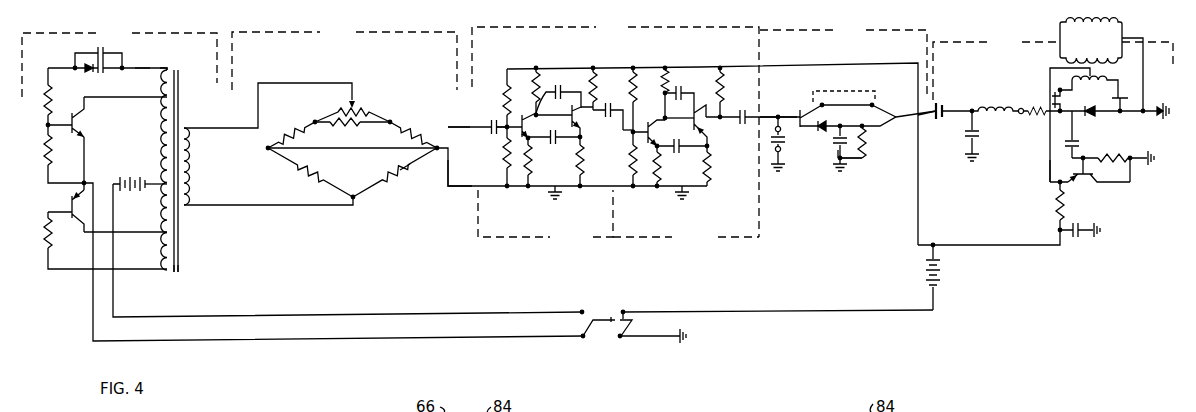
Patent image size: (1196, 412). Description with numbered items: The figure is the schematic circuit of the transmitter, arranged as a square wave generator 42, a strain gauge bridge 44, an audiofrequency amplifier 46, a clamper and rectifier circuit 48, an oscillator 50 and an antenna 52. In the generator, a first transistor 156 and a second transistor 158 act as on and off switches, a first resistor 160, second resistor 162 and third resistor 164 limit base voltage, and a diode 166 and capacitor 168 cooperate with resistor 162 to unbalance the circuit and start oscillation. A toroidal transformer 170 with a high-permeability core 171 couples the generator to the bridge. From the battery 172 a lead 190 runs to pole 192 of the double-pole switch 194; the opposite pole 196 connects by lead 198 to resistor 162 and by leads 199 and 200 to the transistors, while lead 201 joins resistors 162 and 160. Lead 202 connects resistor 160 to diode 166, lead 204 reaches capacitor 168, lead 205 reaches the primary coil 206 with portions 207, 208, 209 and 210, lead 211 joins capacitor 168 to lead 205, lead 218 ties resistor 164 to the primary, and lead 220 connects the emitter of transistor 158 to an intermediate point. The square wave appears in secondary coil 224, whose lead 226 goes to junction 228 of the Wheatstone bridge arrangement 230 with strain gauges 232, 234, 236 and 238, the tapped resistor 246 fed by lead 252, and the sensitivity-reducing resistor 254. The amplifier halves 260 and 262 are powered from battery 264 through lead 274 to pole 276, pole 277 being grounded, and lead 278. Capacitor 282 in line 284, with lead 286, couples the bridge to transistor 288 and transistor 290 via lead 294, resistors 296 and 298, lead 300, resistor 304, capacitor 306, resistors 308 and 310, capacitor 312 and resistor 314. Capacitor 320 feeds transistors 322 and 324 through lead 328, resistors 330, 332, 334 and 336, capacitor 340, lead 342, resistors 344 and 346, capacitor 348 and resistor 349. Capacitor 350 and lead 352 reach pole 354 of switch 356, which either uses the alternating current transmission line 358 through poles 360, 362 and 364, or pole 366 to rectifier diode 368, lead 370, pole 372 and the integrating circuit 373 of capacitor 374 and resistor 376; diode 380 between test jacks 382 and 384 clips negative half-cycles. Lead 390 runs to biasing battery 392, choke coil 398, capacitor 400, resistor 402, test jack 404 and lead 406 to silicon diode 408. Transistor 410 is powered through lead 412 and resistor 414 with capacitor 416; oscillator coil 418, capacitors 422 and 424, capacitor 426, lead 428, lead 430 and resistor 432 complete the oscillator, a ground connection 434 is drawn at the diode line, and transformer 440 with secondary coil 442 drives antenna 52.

The square wave generator 42 is at (119, 63).
The strain gauge bridge 44 is at (344, 56).
The audiofrequency amplifier 46 is at (615, 129).
The clamper and rectifier circuit 48 is at (843, 60).
The oscillator 50 is at (1053, 67).
The antenna 52 is at (1118, 28).
The first transistor 156 is at (80, 129).
The second transistor 158 is at (68, 205).
The first resistor 160 is at (45, 98).
The second resistor 162 is at (45, 150).
The third resistor 164 is at (44, 237).
The diode 166 is at (90, 74).
The capacitor 168 is at (108, 50).
The toroidal transformer 170 is at (182, 241).
The core 171 is at (176, 273).
The battery 172 is at (120, 178).
The lead 190 is at (263, 316).
The pole 192 is at (581, 310).
The double-pole switch 194 is at (604, 342).
The pole 196 is at (579, 339).
The lead 198 is at (90, 183).
The lead 199 is at (85, 165).
The lead 200 is at (80, 190).
The lead 201 is at (45, 127).
The lead 202 is at (52, 67).
The lead 204 is at (80, 56).
The lead 205 is at (140, 72).
The primary coil 206 is at (162, 67).
The primary coil portion 207 is at (165, 78).
The primary coil portion 208 is at (164, 100).
The primary coil portion 209 is at (163, 195).
The primary coil portion 210 is at (162, 258).
The lead 211 is at (125, 66).
The lead 218 is at (79, 271).
The lead 220 is at (162, 232).
The secondary coil 224 is at (193, 173).
The lead 226 is at (262, 207).
The junction 228 is at (358, 198).
The Wheatstone bridge arrangement 230 is at (410, 176).
The strain gauge 232 is at (299, 165).
The strain gauge 234 is at (397, 170).
The strain gauge 236 is at (278, 141).
The strain gauge 238 is at (405, 128).
The tapped resistor 246 is at (363, 106).
The lead 252 is at (320, 82).
The resistor 254 is at (337, 126).
The first amplifier half 260 is at (545, 218).
The second amplifier half 262 is at (686, 238).
The battery 264 is at (941, 275).
The lead 274 is at (785, 313).
The pole 276 is at (625, 310).
The pole 277 is at (620, 339).
The lead 278 is at (614, 66).
The capacitor 282 is at (494, 118).
The line 284 is at (481, 126).
The lead 286 is at (470, 189).
The first transistor 288 is at (537, 110).
The second transistor 290 is at (576, 114).
The lead 294 is at (496, 135).
The resistor 296 is at (505, 92).
The resistor 298 is at (505, 160).
The lead 300 is at (540, 115).
The resistor 304 is at (532, 160).
The capacitor 306 is at (553, 142).
The resistor 308 is at (540, 78).
The resistor 310 is at (536, 66).
The capacitor 312 is at (560, 90).
The resistor 314 is at (594, 68).
The capacitor 320 is at (615, 97).
The transistor 322 is at (647, 119).
The transistor 324 is at (703, 124).
The lead 328 is at (630, 132).
The resistor 330 is at (636, 98).
The resistor 332 is at (632, 170).
The resistor 334 is at (658, 158).
The resistor 336 is at (711, 168).
The capacitor 340 is at (690, 142).
The lead 342 is at (683, 113).
The resistor 344 is at (670, 86).
The resistor 346 is at (666, 67).
The capacitor 348 is at (686, 92).
The resistor 349 is at (722, 88).
The capacitor 350 is at (726, 110).
The lead 352 is at (749, 106).
The pole 354 is at (798, 124).
The switch 356 is at (821, 166).
The alternating current transmission line 358 is at (849, 104).
The pole 360 is at (821, 100).
The pole 362 is at (874, 100).
The pole 364 is at (880, 120).
The pole 366 is at (817, 130).
The rectifier diode 368 is at (840, 125).
The lead 370 is at (850, 162).
The pole 372 is at (865, 134).
The filter or integrating circuit 373 is at (854, 176).
The capacitor 374 is at (834, 140).
The resistor 376 is at (870, 150).
The diode 380 is at (772, 140).
The test jack 382 is at (766, 137).
The test jack 384 is at (776, 160).
The lead 390 is at (921, 120).
The biasing battery 392 is at (940, 104).
The choke coil 398 is at (992, 107).
The capacitor 400 is at (980, 140).
The resistor 402 is at (1041, 121).
The test jack 404 is at (1046, 108).
The lead 406 is at (1064, 116).
The silicon diode 408 is at (1096, 114).
The transistor 410 is at (1086, 188).
The lead 412 is at (1005, 246).
The resistor 414 is at (1055, 208).
The capacitor 416 is at (1076, 238).
The oscillator coil 418 is at (1089, 89).
The capacitor 422 is at (1123, 90).
The capacitor 424 is at (1050, 82).
The capacitor 426 is at (1080, 144).
The lead 428 is at (1050, 166).
The lead 430 is at (1126, 184).
The resistor 432 is at (1116, 156).
The ground 434 is at (1144, 96).
The transformer 440 is at (1146, 55).
The secondary coil 442 is at (1063, 44).